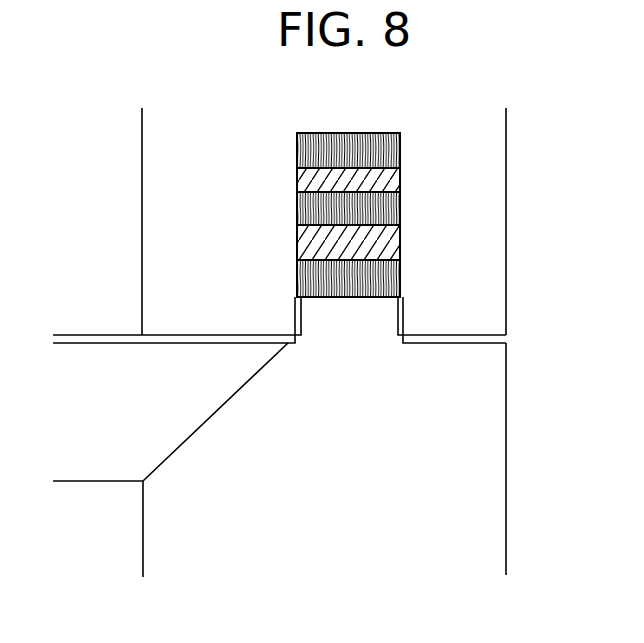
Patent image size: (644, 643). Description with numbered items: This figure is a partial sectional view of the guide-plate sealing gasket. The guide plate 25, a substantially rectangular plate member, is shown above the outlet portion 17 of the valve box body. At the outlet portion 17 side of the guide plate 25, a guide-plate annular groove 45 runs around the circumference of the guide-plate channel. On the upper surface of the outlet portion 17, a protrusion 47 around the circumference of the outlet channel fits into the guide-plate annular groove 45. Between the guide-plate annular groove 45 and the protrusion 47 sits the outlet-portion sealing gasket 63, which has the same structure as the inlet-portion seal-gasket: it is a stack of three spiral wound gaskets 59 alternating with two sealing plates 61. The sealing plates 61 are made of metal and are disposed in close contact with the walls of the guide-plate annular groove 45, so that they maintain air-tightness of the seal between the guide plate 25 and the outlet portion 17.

The outlet portion 17 is at (470, 472).
The guide plate 25 is at (475, 175).
The guide-plate annular groove 45 is at (401, 137).
The protrusion 47 is at (383, 317).
The spiral wound gasket 59 is at (299, 150).
The sealing plate 61 is at (298, 179).
The outlet-portion sealing gasket 63 is at (278, 223).